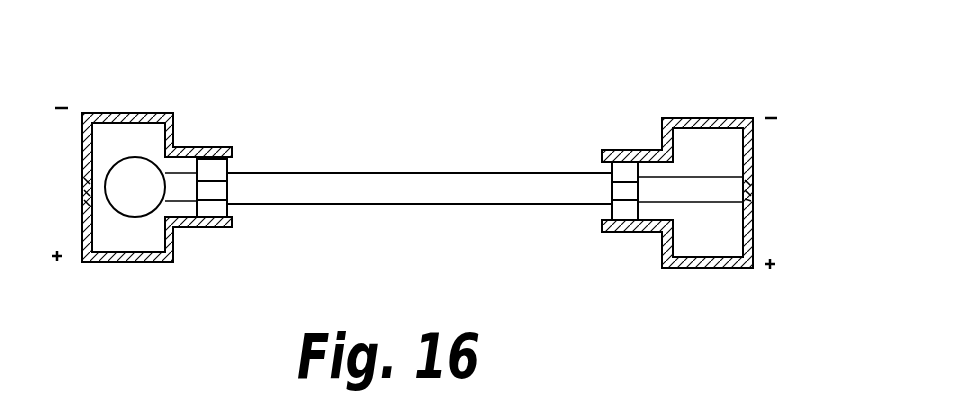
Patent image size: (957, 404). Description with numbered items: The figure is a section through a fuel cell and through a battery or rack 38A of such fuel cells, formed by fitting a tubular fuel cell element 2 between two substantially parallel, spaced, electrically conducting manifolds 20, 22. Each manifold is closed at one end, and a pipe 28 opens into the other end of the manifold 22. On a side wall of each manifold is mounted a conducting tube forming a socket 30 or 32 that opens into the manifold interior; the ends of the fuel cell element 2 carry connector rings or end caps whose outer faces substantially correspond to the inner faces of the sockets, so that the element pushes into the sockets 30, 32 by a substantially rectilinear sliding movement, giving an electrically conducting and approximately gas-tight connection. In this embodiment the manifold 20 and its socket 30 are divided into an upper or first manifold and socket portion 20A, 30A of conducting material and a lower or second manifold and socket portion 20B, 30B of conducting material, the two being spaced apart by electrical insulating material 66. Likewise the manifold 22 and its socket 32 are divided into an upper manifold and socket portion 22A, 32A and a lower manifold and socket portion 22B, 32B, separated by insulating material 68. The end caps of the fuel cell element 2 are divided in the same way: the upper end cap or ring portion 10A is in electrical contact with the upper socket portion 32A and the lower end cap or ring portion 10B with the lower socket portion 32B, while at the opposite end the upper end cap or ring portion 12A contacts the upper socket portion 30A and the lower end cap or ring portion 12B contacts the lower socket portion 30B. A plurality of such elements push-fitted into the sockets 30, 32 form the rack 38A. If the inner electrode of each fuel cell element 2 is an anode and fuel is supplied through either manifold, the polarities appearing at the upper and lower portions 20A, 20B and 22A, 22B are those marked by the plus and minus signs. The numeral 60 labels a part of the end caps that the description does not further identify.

The fuel cell element 2 is at (393, 157).
The upper end cap or ring portion 10A is at (213, 172).
The lower end cap or ring portion 10B is at (218, 212).
The upper end cap or ring portion 12A is at (622, 163).
The lower end cap or ring portion 12B is at (625, 210).
The manifold 20 is at (700, 115).
The upper manifold portion 20A is at (728, 117).
The lower manifold portion 20B is at (702, 258).
The manifold 22 is at (102, 103).
The upper manifold portion 22A is at (132, 112).
The lower manifold portion 22B is at (123, 255).
The pipe 28 is at (123, 157).
The socket 30 is at (635, 145).
The upper socket portion 30A is at (610, 152).
The lower socket portion 30B is at (607, 230).
The socket 32 is at (188, 143).
The upper socket portion 32A is at (207, 150).
The lower socket portion 32B is at (196, 220).
The rack of fuel cells 38A is at (498, 242).
The electrode terminal 60 is at (217, 190).
The insulating material 66 is at (747, 197).
The insulating material 68 is at (97, 190).